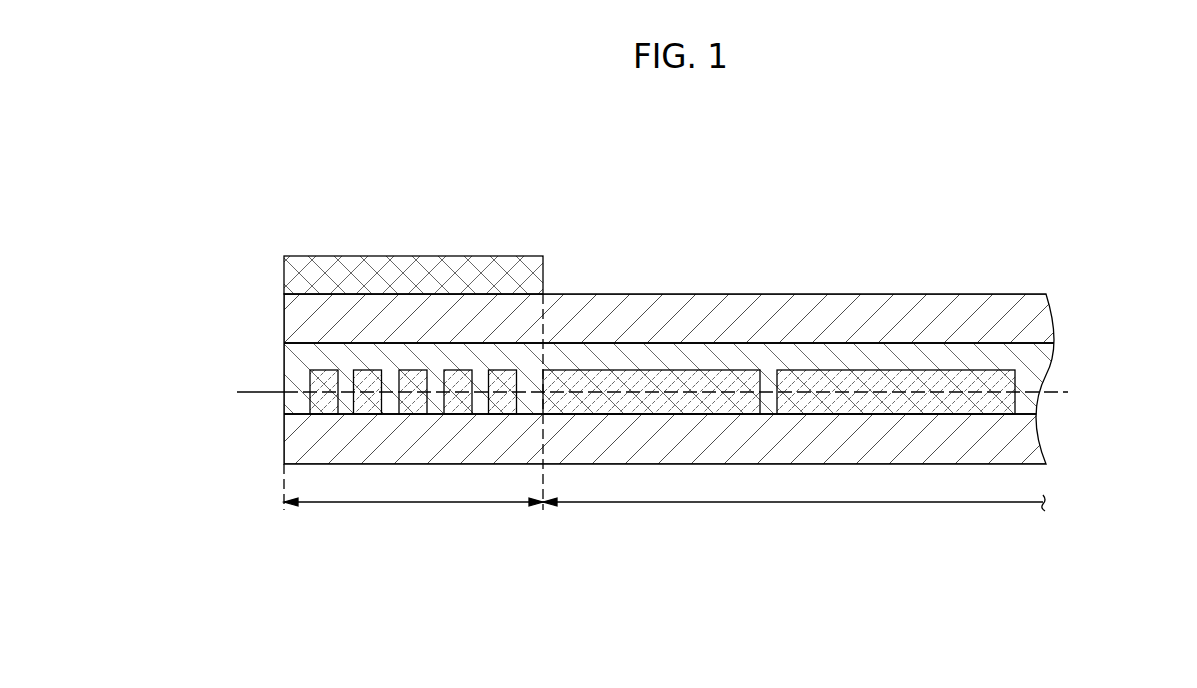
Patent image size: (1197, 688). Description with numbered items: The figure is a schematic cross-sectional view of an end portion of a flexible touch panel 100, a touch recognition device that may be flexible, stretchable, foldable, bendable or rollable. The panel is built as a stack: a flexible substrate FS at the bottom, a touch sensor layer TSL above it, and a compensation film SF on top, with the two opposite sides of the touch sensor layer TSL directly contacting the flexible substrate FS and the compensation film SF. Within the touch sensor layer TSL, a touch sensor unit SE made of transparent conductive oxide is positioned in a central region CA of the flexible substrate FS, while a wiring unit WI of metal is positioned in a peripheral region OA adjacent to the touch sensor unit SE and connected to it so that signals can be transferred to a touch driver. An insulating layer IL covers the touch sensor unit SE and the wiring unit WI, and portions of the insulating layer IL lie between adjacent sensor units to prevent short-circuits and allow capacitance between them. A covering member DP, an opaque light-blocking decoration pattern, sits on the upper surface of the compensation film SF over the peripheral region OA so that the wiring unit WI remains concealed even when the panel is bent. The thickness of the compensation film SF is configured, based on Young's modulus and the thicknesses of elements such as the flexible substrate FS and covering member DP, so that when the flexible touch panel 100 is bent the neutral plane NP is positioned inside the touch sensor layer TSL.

The flexible touch panel 100 is at (808, 148).
The covering member DP is at (368, 272).
The compensation film SF is at (298, 322).
The insulating layer IL is at (679, 378).
The touch sensor unit SE is at (662, 392).
The wiring unit WI is at (498, 403).
The flexible substrate FS is at (679, 439).
The touch sensor layer TSL is at (679, 378).
The neutral plane NP is at (640, 394).
The peripheral region OA is at (413, 516).
The central region CA is at (794, 514).